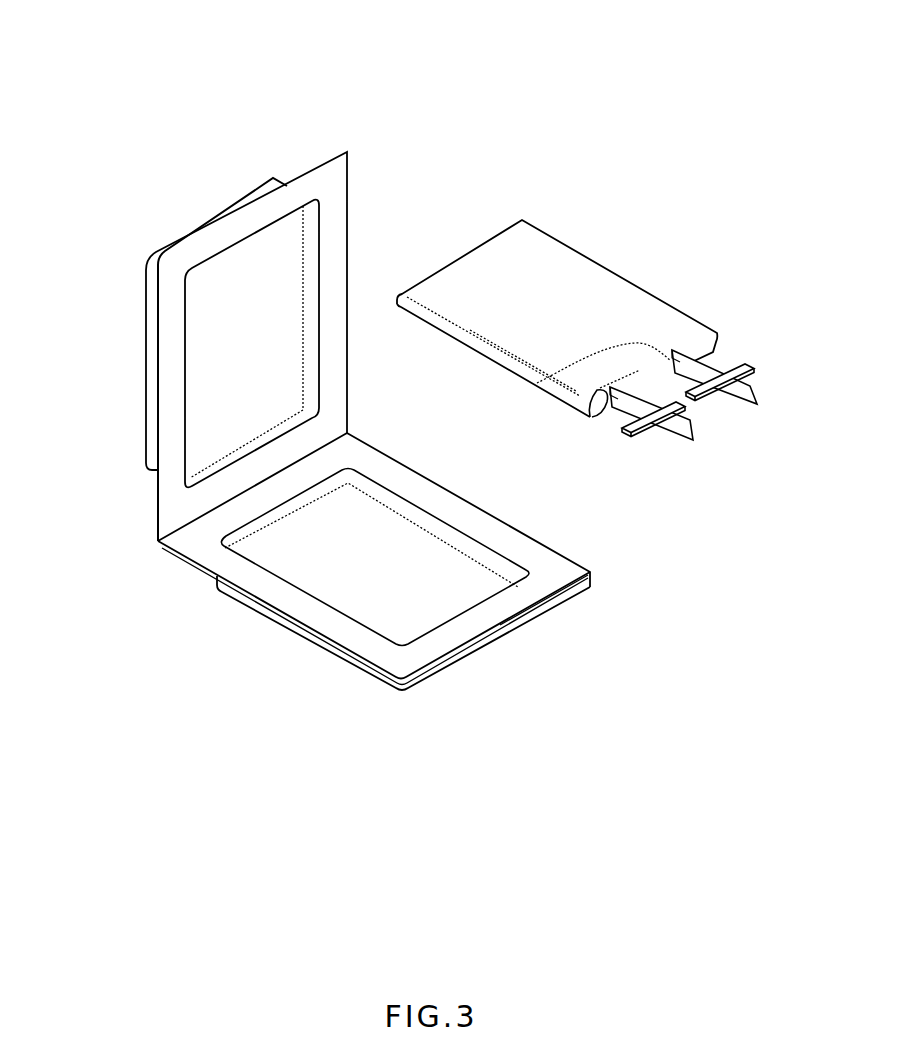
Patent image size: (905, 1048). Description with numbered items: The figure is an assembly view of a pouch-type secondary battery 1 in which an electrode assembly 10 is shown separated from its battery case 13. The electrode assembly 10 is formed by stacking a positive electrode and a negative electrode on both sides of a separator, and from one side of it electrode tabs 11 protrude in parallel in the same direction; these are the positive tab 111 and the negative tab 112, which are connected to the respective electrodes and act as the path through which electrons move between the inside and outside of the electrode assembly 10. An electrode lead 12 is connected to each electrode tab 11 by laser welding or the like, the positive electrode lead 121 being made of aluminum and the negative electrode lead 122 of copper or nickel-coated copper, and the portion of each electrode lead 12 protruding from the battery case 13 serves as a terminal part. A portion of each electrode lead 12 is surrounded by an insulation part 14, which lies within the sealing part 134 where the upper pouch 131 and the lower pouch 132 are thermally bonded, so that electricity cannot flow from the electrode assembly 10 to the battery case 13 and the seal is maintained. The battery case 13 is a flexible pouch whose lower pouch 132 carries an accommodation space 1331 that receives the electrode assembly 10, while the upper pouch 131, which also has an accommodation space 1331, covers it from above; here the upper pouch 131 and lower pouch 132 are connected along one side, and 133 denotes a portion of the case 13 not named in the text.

The secondary battery 1 is at (482, 84).
The electrode assembly 10 is at (693, 233).
The electrode tab 11 is at (500, 425).
The positive tab 111 is at (540, 383).
The negative tab 112 is at (590, 400).
The electrode lead 12 is at (787, 434).
The positive electrode lead 121 is at (750, 400).
The negative electrode lead 122 is at (680, 430).
The battery case 13 is at (70, 292).
The upper pouch 131 is at (148, 292).
The lower pouch 132 is at (183, 558).
The support plate 133 is at (298, 633).
The accommodation space 1331 is at (425, 617).
The sealing part 134 is at (557, 591).
The insulation part 14 is at (708, 352).